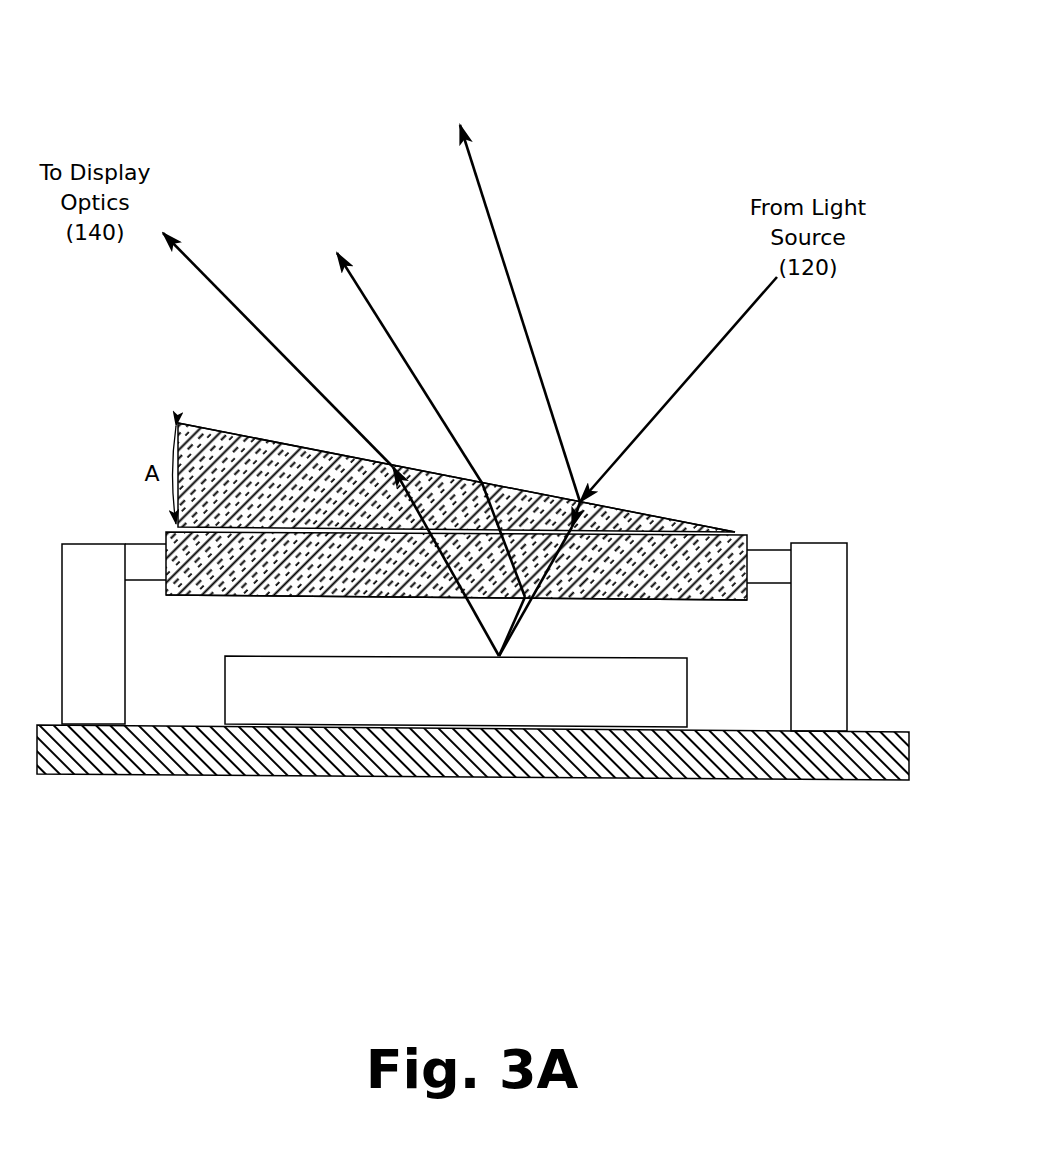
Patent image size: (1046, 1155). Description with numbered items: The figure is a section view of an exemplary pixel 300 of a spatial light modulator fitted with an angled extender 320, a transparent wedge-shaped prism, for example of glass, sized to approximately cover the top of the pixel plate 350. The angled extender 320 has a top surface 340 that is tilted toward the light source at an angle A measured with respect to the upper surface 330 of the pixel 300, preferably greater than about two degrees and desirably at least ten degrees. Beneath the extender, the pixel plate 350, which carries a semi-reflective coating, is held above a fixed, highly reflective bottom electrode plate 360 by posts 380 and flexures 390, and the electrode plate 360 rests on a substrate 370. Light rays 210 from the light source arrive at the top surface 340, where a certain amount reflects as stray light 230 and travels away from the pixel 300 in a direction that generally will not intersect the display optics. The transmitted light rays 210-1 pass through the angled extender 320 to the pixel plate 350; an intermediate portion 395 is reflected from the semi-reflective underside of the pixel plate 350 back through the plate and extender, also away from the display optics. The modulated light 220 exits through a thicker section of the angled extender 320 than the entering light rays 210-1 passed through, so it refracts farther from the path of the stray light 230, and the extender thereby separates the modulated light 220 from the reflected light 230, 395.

The pixel 300 is at (282, 78).
The light rays 210 is at (712, 342).
The transmitted light rays 210-1 is at (521, 624).
The modulated light 220 is at (243, 312).
The stray light 230 is at (500, 222).
The intermediate portion 395 is at (375, 304).
The angled extender 320 is at (178, 418).
The upper surface 330 is at (633, 537).
The top surface 340 is at (622, 503).
The pixel plate 350 is at (210, 570).
The bottom electrode plate 360 is at (456, 691).
The substrate 370 is at (470, 779).
The posts 380 is at (62, 630).
The flexures 390 is at (143, 547).